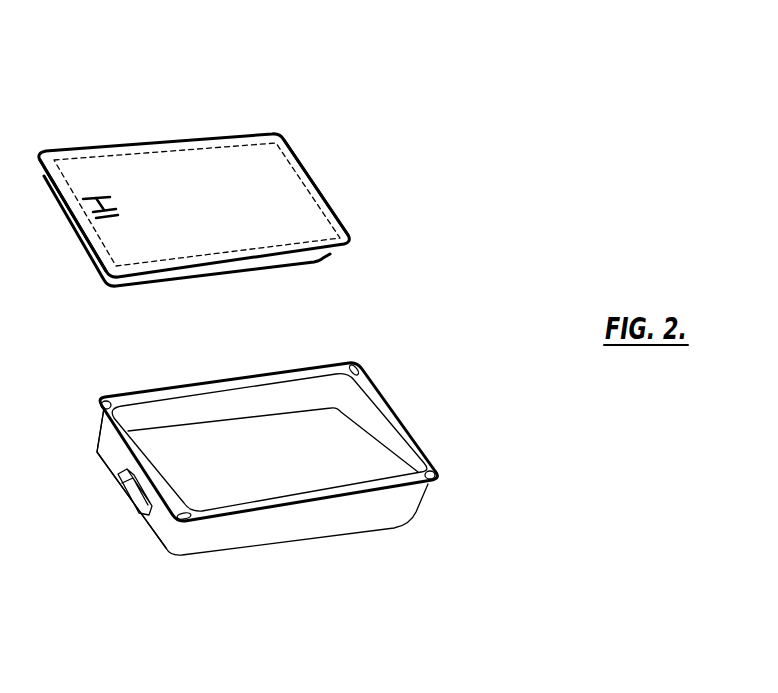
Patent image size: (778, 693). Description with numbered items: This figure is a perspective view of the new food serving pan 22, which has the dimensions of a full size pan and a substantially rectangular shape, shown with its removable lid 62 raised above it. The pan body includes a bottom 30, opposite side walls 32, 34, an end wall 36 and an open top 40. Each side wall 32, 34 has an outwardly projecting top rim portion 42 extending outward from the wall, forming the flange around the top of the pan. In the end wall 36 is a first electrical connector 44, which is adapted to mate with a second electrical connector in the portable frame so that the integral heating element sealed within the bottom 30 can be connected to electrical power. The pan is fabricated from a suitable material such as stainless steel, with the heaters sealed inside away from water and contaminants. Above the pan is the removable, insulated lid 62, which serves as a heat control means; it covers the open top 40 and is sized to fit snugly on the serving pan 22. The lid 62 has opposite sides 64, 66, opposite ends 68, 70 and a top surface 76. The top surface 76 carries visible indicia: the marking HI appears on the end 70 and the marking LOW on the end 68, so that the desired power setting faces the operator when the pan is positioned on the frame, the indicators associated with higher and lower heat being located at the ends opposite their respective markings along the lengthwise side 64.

The food serving pan 22 is at (285, 472).
The bottom 30 is at (239, 521).
The side wall 32 is at (341, 528).
The side wall 34 is at (285, 394).
The end wall 36 is at (106, 452).
The open top 40 is at (222, 397).
The top rim portion 42 is at (246, 376).
The first electrical connector 44 is at (131, 514).
The lid 62 is at (197, 190).
The side 64 is at (155, 147).
The side 66 is at (237, 275).
The end 68 is at (333, 204).
The end 70 is at (57, 208).
The top surface 76 is at (202, 178).